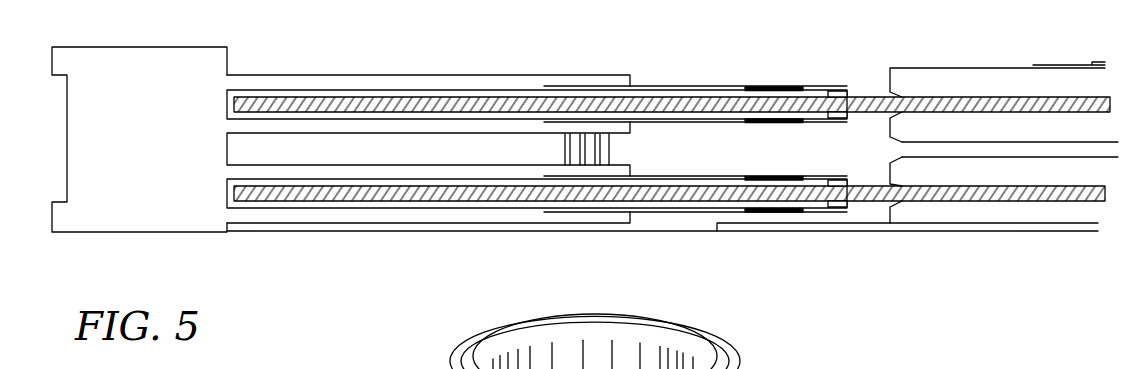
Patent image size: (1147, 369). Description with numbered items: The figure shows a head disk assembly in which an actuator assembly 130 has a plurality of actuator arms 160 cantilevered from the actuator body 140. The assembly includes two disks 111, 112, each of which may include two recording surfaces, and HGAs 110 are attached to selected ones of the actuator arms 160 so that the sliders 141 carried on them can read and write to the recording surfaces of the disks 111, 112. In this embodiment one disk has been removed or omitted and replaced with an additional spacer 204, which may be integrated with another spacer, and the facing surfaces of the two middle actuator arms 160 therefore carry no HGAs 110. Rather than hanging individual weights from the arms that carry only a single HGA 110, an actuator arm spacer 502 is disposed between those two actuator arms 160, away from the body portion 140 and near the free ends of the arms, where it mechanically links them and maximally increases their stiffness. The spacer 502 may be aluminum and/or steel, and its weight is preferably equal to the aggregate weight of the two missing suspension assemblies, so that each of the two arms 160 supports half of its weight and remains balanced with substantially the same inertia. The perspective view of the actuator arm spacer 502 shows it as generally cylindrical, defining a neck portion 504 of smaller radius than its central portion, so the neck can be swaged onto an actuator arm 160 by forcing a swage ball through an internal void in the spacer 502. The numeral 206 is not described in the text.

In FIG. 5, the HGA 110 is at (773, 84).
In FIG. 5, the disk 111 is at (263, 100).
In FIG. 5, the disk 112 is at (265, 201).
In FIG. 5, the actuator assembly 130 is at (566, 67).
In FIG. 5, the actuator body 140 is at (90, 220).
In FIG. 5, the slider 141 is at (848, 91).
In FIG. 5, the actuator arm 160 is at (358, 74).
In FIG. 5, the additional spacer 204 is at (910, 147).
In FIG. 5, the connector housing 206 is at (920, 68).
In FIG. 5, the actuator arm spacer 502 is at (610, 147).
In FIG. 6, the actuator arm spacer 502 is at (758, 358).
In FIG. 6, the first neck portion 504 is at (510, 328).